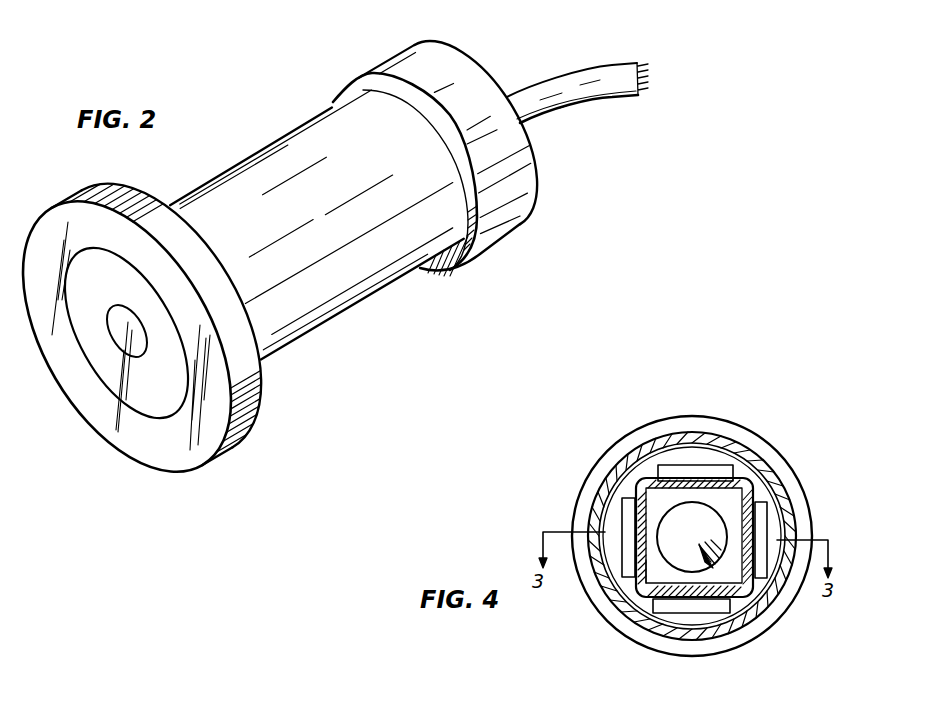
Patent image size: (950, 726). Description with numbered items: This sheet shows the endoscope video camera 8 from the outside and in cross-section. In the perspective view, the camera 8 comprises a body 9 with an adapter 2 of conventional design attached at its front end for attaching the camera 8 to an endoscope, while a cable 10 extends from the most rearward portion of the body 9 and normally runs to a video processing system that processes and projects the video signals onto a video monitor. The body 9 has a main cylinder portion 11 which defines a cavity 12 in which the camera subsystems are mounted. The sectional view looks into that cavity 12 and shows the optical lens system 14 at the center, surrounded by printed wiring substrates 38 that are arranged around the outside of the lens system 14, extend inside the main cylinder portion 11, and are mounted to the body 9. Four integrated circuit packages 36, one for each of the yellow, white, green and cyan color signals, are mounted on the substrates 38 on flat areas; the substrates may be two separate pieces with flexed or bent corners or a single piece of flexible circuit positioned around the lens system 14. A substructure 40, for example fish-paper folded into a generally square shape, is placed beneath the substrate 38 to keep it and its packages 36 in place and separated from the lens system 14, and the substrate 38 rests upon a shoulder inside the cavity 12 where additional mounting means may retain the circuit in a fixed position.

In FIG. 2, the adapter 2 is at (158, 472).
In FIG. 2, the camera 8 is at (256, 131).
In FIG. 2, the body 9 is at (355, 318).
In FIG. 4, the body 9 is at (760, 440).
In FIG. 2, the cable 10 is at (562, 50).
In FIG. 2, the main cylinder portion 11 is at (390, 283).
In FIG. 4, the main cylinder portion 11 is at (707, 435).
In FIG. 4, the cavity 12 is at (700, 622).
In FIG. 4, the optical lens system 14 is at (675, 512).
In FIG. 4, the integrated circuit packages 36 is at (683, 466).
In FIG. 4, the printed wiring substrates 38 is at (645, 487).
In FIG. 4, the substructure 40 is at (647, 587).